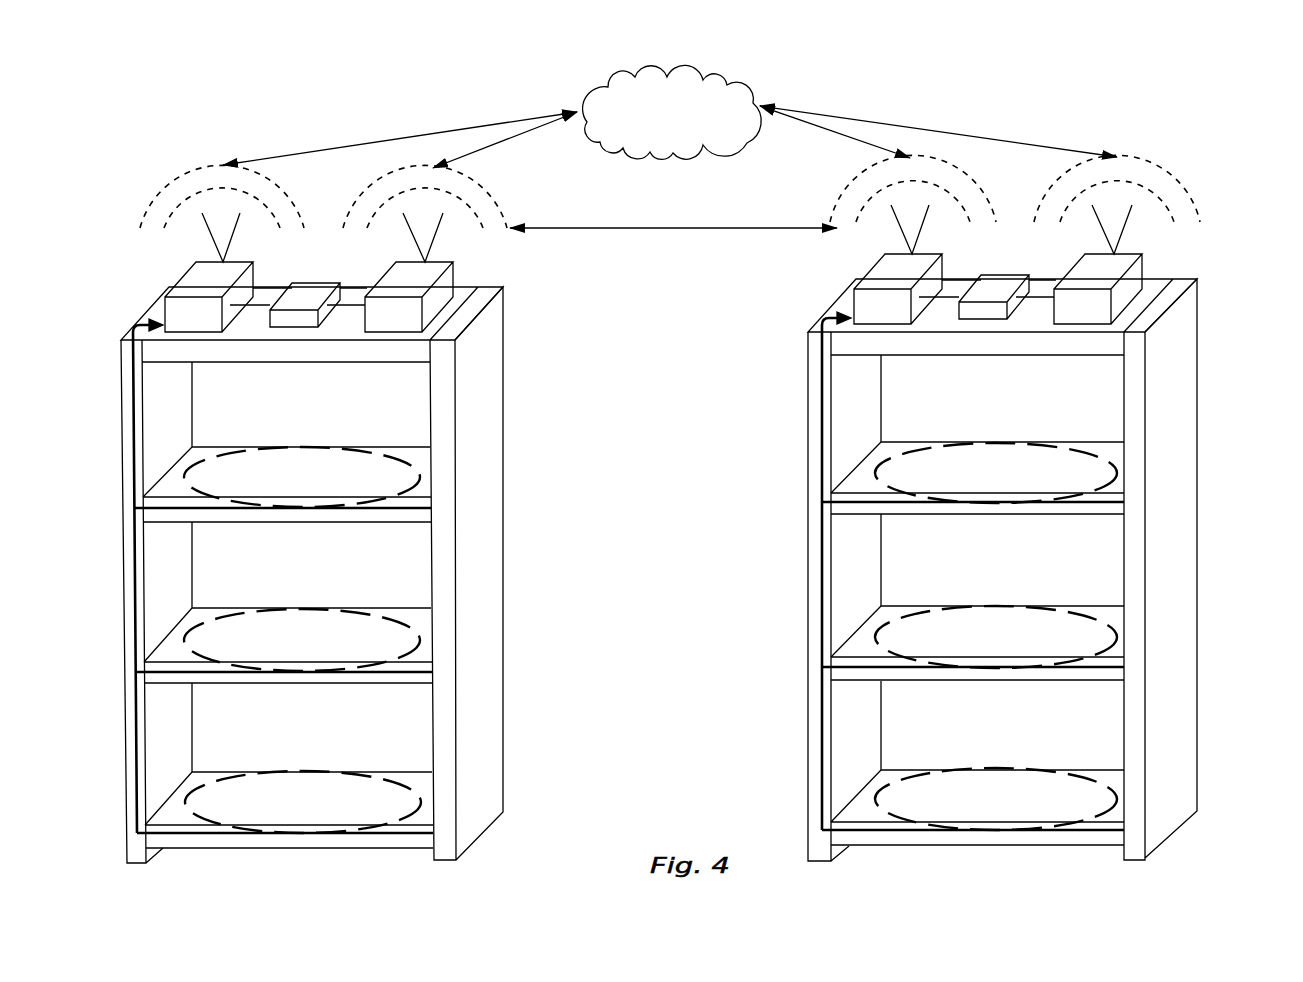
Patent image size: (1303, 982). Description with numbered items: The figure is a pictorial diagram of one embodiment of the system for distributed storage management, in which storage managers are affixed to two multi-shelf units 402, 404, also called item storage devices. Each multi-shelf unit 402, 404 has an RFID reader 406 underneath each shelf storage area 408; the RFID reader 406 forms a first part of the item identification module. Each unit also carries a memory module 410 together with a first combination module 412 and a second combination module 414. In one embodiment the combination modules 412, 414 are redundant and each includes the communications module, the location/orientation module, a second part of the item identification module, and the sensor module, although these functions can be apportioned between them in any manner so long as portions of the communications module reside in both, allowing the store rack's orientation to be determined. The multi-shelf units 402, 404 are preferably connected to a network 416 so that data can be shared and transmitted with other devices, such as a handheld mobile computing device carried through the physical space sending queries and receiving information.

The multi-shelf unit 402 is at (480, 367).
The multi-shelf unit 404 is at (1180, 360).
The RFID reader 406 is at (313, 448).
The shelf storage area 408 is at (417, 508).
The memory module 410 is at (327, 282).
The first combination module 412 is at (224, 166).
The second combination module 414 is at (500, 193).
The network 416 is at (712, 77).